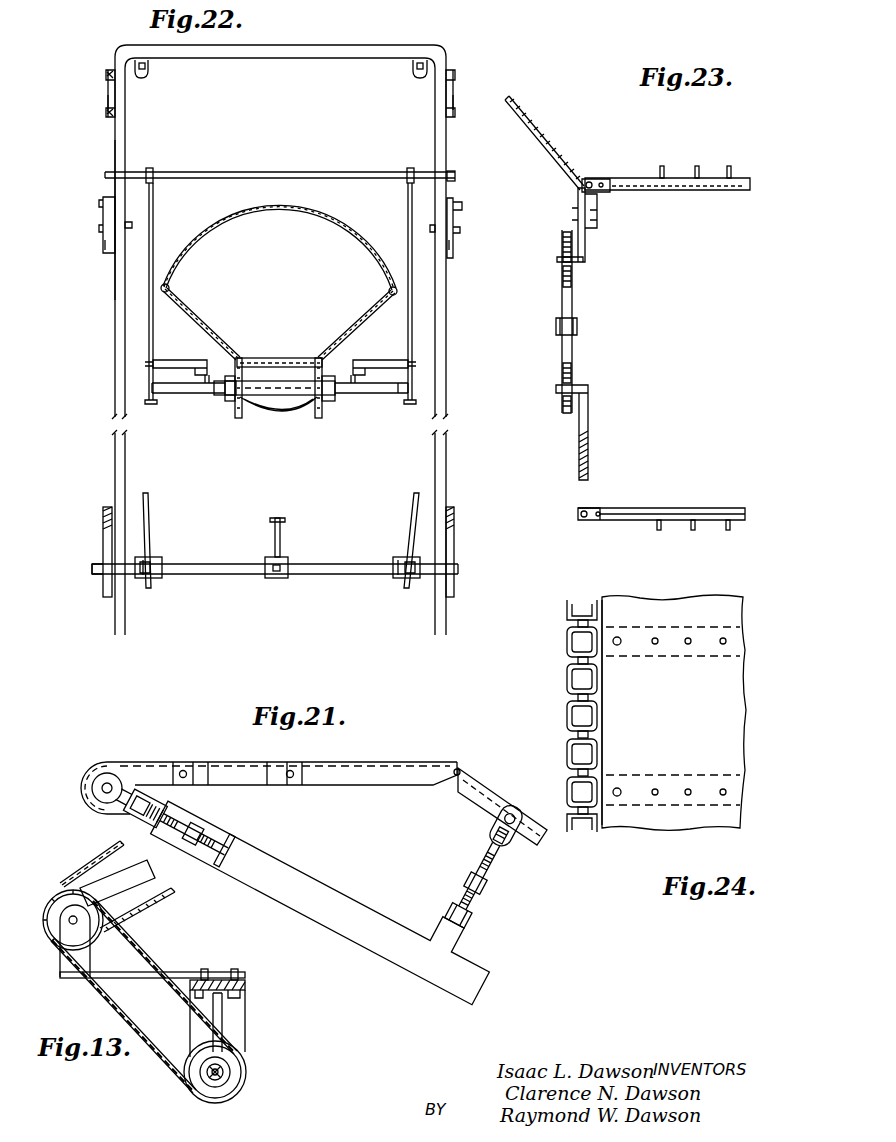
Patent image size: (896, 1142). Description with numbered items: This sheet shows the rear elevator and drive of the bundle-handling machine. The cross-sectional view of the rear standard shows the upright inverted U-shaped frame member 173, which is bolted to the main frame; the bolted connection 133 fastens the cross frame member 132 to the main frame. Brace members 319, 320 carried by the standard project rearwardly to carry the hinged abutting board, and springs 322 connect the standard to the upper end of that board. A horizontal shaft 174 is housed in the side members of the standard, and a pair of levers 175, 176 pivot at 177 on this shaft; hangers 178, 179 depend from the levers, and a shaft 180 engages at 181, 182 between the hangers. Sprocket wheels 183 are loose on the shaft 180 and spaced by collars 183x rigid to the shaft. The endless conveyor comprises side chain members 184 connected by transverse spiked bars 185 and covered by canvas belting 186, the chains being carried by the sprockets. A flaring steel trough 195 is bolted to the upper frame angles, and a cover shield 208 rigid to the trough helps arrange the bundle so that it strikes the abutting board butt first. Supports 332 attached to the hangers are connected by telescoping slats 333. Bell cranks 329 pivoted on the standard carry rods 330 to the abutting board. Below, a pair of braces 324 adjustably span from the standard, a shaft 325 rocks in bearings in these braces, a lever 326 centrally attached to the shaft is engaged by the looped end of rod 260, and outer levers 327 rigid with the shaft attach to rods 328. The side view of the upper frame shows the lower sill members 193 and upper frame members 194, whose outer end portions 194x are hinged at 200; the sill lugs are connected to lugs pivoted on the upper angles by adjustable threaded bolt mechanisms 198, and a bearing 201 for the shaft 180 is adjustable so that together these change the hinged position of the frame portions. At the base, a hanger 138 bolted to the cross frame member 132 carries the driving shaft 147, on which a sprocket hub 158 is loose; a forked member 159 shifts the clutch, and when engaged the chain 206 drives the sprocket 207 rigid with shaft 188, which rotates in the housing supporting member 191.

In FIG. 22, the upright inverted U-shaped frame member 173 is at (315, 47).
In FIG. 22, the bolted connection 133 is at (122, 156).
In FIG. 22, the brace member 320 is at (110, 75).
In FIG. 22, the spring 322 is at (147, 73).
In FIG. 22, the brace member 319 is at (106, 114).
In FIG. 22, the horizontal shaft 174 is at (337, 172).
In FIG. 22, the pivot 177 is at (455, 178).
In FIG. 22, the lever 176 is at (151, 168).
In FIG. 22, the lever 175 is at (411, 172).
In FIG. 22, the hanger 179 is at (155, 236).
In FIG. 22, the hanger 178 is at (408, 208).
In FIG. 22, the rod 330 is at (100, 203).
In FIG. 22, the bell crank 329 is at (105, 245).
In FIG. 22, the cover shield 208 is at (326, 220).
In FIG. 22, the flaring steel trough 195 is at (195, 312).
In FIG. 23, the flaring steel trough 195 is at (558, 156).
In FIG. 22, the support 332 is at (173, 357).
In FIG. 22, the side chain member 184 is at (240, 357).
In FIG. 23, the side chain member 184 is at (585, 177).
In FIG. 24, the side chain member 184 is at (564, 688).
In FIG. 13, the side chain member 184 is at (158, 908).
In FIG. 22, the transverse spiked bar 185 is at (268, 358).
In FIG. 23, the transverse spiked bar 185 is at (742, 177).
In FIG. 24, the transverse spiked bar 185 is at (733, 608).
In FIG. 22, the shaft engagement point 182 is at (147, 390).
In FIG. 22, the shaft 180 is at (355, 392).
In FIG. 21, the shaft 180 is at (103, 800).
In FIG. 22, the shaft engagement point 181 is at (420, 394).
In FIG. 22, the slat 333 is at (217, 380).
In FIG. 22, the sprocket wheel 183 is at (258, 405).
In FIG. 22, the collar 183x is at (253, 415).
In FIG. 22, the shaft 325 is at (457, 568).
In FIG. 22, the brace 324 is at (107, 537).
In FIG. 22, the rod 328 is at (152, 528).
In FIG. 22, the outer lever 327 is at (142, 578).
In FIG. 22, the lever 326 is at (286, 543).
In FIG. 22, the rod 260 is at (287, 520).
In FIG. 23, the upper frame member 194 is at (589, 206).
In FIG. 21, the upper frame member 194 is at (490, 802).
In FIG. 23, the adjustable threaded bolt mechanism 198 is at (572, 308).
In FIG. 23, the lower sill member 193 is at (589, 457).
In FIG. 13, the lower sill member 193 is at (117, 883).
In FIG. 24, the canvas belting 186 is at (674, 712).
In FIG. 21, the separate frame portion 194x is at (384, 780).
In FIG. 21, the bearing 201 is at (112, 781).
In FIG. 21, the hinge 200 is at (458, 768).
In FIG. 13, the sprocket 207 is at (62, 891).
In FIG. 13, the shaft 188 is at (72, 923).
In FIG. 13, the housing supporting member 191 is at (131, 962).
In FIG. 13, the chain 206 is at (158, 1053).
In FIG. 13, the sprocket hub 158 is at (240, 1067).
In FIG. 13, the driving shaft 147 is at (219, 1072).
In FIG. 13, the cross frame member 132 is at (247, 985).
In FIG. 13, the hanger 138 is at (241, 1022).
In FIG. 13, the forked member 159 is at (215, 1032).